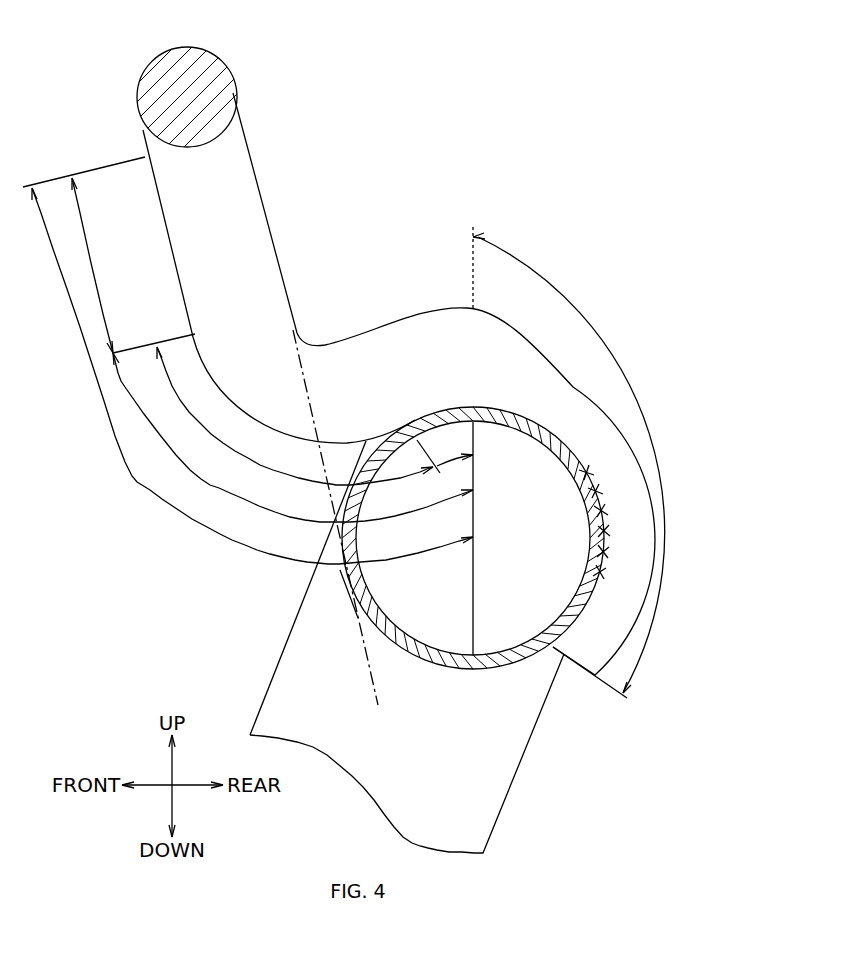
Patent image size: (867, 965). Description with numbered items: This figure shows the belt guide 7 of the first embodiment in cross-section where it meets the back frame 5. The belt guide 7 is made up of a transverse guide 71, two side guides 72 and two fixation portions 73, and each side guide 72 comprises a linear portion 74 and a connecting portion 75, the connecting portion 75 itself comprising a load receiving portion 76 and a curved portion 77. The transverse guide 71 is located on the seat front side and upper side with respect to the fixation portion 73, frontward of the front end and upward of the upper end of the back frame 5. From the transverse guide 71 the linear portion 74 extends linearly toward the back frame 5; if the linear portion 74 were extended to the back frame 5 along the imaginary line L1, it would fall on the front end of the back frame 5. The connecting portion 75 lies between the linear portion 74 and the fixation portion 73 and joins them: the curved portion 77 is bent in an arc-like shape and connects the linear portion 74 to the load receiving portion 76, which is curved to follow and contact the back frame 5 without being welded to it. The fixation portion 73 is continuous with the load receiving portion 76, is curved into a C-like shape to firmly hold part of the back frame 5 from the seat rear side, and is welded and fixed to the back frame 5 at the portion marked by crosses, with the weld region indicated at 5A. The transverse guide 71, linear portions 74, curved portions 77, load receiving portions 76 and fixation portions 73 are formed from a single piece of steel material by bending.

The back frame 5 is at (276, 665).
The joint portion of plate 5A is at (360, 613).
The belt guide 7 is at (282, 165).
The transverse guide 71 is at (220, 56).
The side guide 72 is at (207, 527).
The fixation portion 73 is at (660, 432).
The linear portion 74 is at (92, 267).
The connecting portion 75 is at (223, 490).
The load receiving portion 76 is at (477, 455).
The curved portion 77 is at (233, 450).
The imaginary line L1 is at (298, 359).